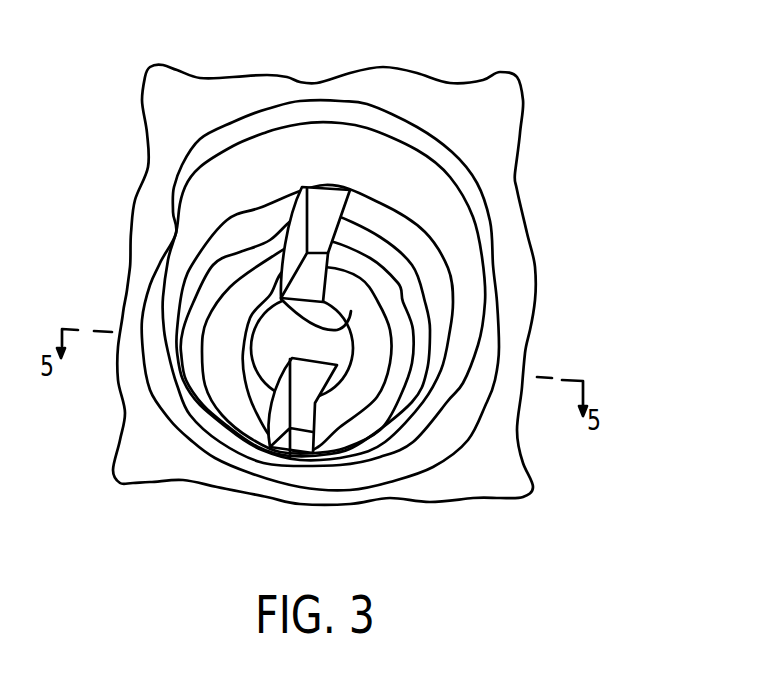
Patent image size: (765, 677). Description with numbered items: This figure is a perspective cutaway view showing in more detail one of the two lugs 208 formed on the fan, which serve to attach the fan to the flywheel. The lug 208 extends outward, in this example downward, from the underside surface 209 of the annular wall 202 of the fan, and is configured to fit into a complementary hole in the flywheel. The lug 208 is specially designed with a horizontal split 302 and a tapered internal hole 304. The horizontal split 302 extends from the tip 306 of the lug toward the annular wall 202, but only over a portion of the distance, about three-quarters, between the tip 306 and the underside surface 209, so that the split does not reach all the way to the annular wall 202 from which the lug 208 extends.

The horizontal split 302 is at (322, 210).
The tapered internal hole 304 is at (343, 312).
The tip 306 is at (220, 352).
The lug 208 is at (550, 302).
The annular wall 202 is at (400, 308).
The underside surface 209 is at (400, 308).